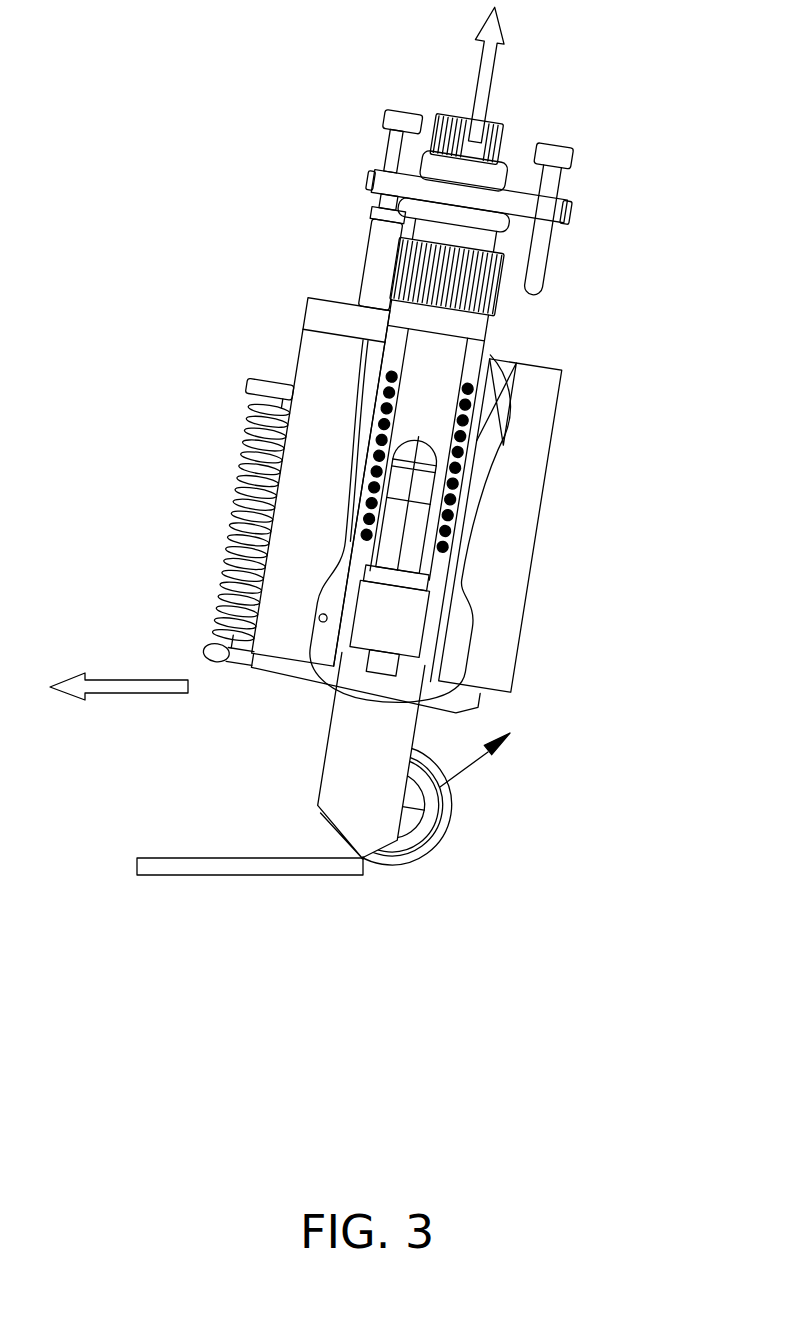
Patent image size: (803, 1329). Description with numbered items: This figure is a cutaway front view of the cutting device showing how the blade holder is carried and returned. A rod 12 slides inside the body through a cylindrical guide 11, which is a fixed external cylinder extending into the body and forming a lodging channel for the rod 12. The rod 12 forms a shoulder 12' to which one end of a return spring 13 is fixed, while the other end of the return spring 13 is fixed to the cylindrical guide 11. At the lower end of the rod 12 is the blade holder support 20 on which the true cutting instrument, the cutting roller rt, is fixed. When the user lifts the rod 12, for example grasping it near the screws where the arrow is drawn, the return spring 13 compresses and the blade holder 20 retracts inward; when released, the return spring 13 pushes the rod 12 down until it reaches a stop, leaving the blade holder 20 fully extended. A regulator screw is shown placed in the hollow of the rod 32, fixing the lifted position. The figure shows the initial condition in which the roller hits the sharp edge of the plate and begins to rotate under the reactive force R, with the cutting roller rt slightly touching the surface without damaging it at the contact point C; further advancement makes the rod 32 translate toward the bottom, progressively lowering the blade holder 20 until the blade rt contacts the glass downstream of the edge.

The rod 32 is at (372, 265).
The cylindrical guide 11 is at (473, 390).
The rod 12 is at (496, 491).
The return spring 13 is at (463, 473).
The shoulder 12' is at (479, 524).
The blade holder support 20 is at (338, 782).
The cutting roller rt is at (360, 857).
The reactive force R is at (488, 760).
The contact point C is at (368, 867).